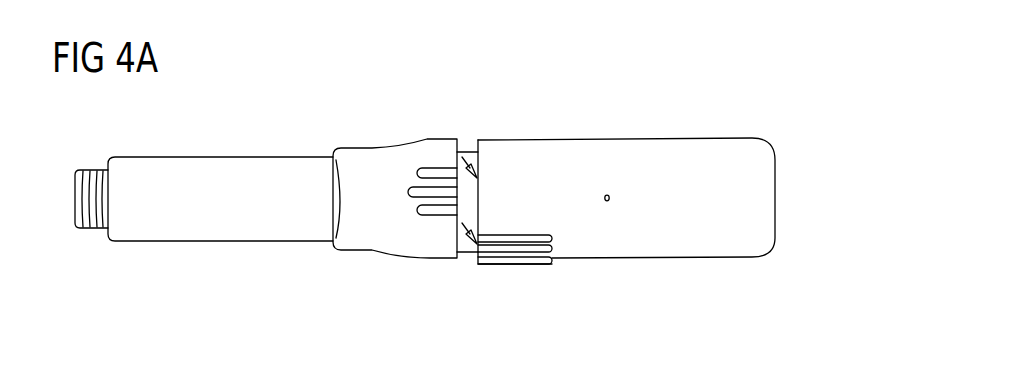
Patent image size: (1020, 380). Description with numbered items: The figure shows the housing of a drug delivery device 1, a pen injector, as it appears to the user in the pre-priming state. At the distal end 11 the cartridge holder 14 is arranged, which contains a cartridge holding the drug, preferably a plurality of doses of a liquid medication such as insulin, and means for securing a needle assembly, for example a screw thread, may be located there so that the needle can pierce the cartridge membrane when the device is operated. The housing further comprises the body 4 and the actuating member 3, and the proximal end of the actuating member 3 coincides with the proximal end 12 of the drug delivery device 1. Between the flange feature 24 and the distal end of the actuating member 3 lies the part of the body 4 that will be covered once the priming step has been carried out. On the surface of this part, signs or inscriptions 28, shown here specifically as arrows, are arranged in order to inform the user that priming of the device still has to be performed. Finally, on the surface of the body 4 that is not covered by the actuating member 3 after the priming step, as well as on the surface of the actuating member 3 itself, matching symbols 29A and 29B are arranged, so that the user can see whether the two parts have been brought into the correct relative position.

The drug delivery device 1 is at (705, 97).
The actuating member 3 is at (643, 156).
The body 4 is at (380, 162).
The distal end 11 is at (87, 243).
The proximal end 12 is at (778, 250).
The cartridge holder 14 is at (233, 175).
The flange feature 24 is at (461, 259).
The signs or inscriptions 28 is at (472, 155).
The matching symbol 29A is at (413, 197).
The matching symbol 29B is at (528, 249).